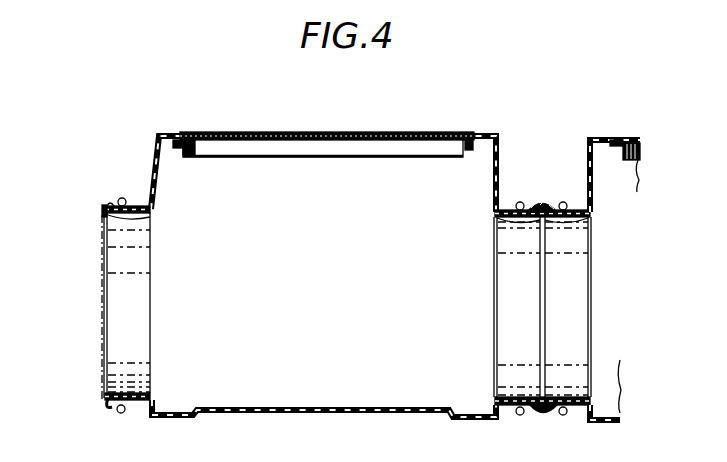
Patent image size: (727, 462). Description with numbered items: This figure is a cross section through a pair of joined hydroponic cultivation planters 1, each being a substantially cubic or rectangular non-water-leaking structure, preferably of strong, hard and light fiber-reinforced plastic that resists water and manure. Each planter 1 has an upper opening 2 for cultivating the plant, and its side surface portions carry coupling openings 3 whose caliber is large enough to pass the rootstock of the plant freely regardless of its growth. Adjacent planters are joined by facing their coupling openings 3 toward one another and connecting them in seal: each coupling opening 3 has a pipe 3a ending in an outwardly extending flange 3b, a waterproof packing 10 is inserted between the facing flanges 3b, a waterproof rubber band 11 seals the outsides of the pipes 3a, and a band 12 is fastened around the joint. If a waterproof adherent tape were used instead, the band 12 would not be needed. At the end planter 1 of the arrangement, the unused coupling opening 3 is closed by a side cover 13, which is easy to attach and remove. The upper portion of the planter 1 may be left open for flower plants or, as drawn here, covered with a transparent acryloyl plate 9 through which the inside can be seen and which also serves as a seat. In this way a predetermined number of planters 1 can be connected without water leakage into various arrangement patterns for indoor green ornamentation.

The planter 1 is at (143, 173).
The upper opening 2 is at (330, 157).
The coupling opening 3 is at (118, 300).
The pipe 3a is at (130, 215).
The flange 3b is at (118, 203).
The transparent acryloyl plate 9 is at (296, 133).
The waterproof packing 10 is at (540, 200).
The waterproof rubber band 11 is at (548, 200).
The band 12 is at (515, 205).
The side cover 13 is at (102, 345).